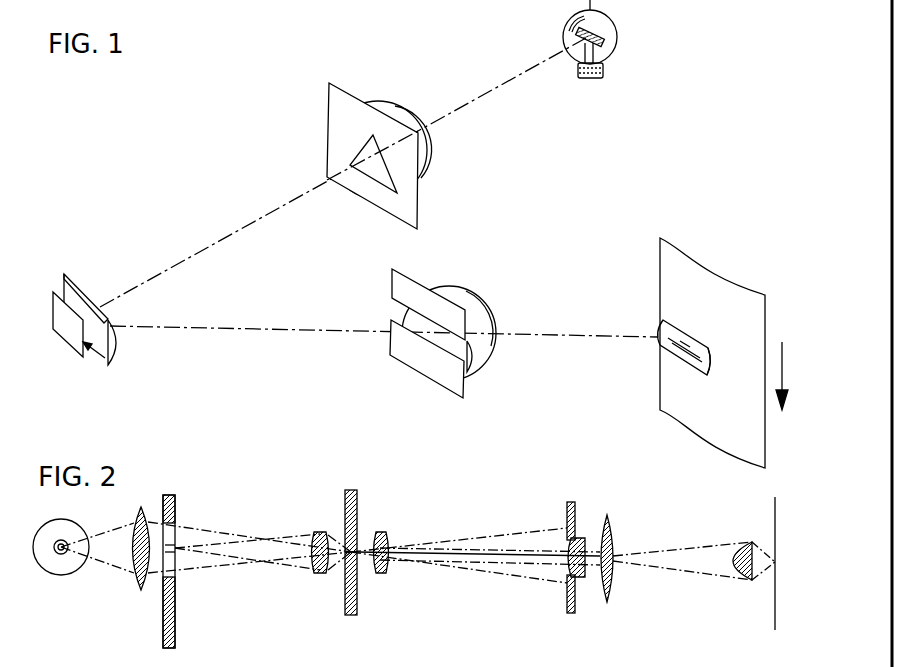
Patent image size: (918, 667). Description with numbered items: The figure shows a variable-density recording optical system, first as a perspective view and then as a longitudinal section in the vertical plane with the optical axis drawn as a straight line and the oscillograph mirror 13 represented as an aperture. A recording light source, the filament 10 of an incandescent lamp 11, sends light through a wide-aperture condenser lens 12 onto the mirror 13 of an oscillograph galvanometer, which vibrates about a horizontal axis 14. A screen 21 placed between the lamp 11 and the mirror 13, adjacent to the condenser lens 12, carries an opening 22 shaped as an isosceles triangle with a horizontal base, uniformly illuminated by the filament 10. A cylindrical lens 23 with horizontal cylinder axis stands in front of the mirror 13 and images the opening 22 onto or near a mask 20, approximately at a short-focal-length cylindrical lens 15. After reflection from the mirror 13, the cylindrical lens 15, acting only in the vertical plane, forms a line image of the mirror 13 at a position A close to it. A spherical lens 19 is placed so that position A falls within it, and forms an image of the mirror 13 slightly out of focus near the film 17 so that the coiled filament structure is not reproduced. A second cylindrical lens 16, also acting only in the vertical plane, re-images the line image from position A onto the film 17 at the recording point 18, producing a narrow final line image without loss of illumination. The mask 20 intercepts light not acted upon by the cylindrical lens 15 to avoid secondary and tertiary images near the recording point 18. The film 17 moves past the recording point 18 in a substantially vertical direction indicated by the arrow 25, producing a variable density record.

In FIG. 1, the filament 10 is at (608, 58).
In FIG. 2, the filament 10 is at (61, 554).
In FIG. 2, the incandescent lamp 11 is at (41, 528).
In FIG. 1, the condenser lens 12 is at (390, 101).
In FIG. 2, the condenser lens 12 is at (134, 521).
In FIG. 1, the mirror 13 is at (62, 345).
In FIG. 2, the mirror 13 is at (357, 556).
In FIG. 1, the axis 14 is at (116, 349).
In FIG. 1, the cylindrical lens 15 is at (471, 358).
In FIG. 2, the cylindrical lens 15 is at (579, 538).
In FIG. 1, the second cylindrical lens 16 is at (707, 363).
In FIG. 2, the second cylindrical lens 16 is at (738, 551).
In FIG. 1, the film 17 is at (720, 271).
In FIG. 2, the film 17 is at (777, 507).
In FIG. 1, the recording point 18 is at (668, 333).
In FIG. 2, the recording point 18 is at (777, 566).
In FIG. 1, the spherical lens 19 is at (451, 286).
In FIG. 2, the spherical lens 19 is at (613, 522).
In FIG. 1, the mask 20 is at (392, 270).
In FIG. 2, the mask 20 is at (571, 502).
In FIG. 1, the screen 21 is at (329, 100).
In FIG. 2, the screen 21 is at (175, 498).
In FIG. 1, the opening 22 is at (381, 178).
In FIG. 2, the opening 22 is at (176, 553).
In FIG. 1, the cylindrical lens 23 is at (66, 275).
In FIG. 2, the cylindrical lens 23 is at (321, 575).
In FIG. 1, the arrow 25 is at (782, 366).
In FIG. 2, the position A is at (612, 575).